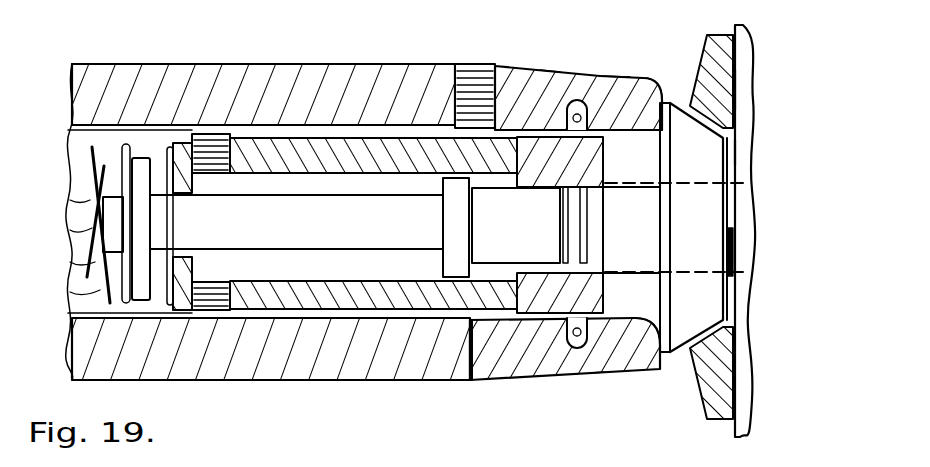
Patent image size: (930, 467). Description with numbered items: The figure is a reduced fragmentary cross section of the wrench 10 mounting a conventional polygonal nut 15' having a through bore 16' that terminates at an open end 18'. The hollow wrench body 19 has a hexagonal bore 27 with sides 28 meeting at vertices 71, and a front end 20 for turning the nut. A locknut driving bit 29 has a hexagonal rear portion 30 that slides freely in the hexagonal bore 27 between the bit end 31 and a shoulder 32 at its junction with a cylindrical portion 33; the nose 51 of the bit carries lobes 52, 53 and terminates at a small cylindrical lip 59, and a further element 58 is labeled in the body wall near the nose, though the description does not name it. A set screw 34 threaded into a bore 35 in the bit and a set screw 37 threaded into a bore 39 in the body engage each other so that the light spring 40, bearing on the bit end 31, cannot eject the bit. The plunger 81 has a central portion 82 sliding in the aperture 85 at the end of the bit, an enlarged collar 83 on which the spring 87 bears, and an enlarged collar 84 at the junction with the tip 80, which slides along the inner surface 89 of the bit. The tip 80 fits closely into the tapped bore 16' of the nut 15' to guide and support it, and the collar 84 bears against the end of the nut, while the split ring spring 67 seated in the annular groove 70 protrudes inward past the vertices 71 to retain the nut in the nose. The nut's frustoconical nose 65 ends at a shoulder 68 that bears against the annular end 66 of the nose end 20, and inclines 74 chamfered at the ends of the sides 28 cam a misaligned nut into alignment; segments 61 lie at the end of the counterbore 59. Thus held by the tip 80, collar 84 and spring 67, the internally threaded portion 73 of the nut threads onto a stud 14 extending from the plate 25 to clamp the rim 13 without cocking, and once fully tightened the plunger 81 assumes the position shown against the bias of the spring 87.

The wrench 10 is at (212, 40).
The hexagonal bore 27 is at (100, 125).
The bit end 31 is at (165, 150).
The wrench body 19 is at (276, 62).
The shoulder 32 is at (342, 195).
The plunger 81 is at (378, 195).
The locknut driving bit 29 is at (413, 172).
The bore 39 is at (463, 66).
The set screw 37 is at (478, 68).
The nose 51 is at (516, 60).
The end cap body 58 is at (553, 100).
The annular groove 70 is at (573, 100).
The polygonal nut 15' is at (616, 52).
The rim 13 is at (700, 48).
The front end 20 is at (637, 80).
The counterbore 59 is at (650, 100).
The plate 25 is at (748, 48).
The annular end 66 is at (737, 91).
The stud 14 is at (737, 153).
The shoulder 68 is at (662, 153).
The internally threaded portion 73 is at (735, 238).
The frustoconical nose 65 is at (712, 303).
The through bore 16' is at (674, 228).
The inclines 74 is at (645, 312).
The segments 61 is at (640, 358).
The split ring spring 67 is at (580, 348).
The open end 18' is at (504, 361).
The lobe 52 is at (472, 322).
The lobe 53 is at (468, 320).
The hexagonal rear portion 30 is at (288, 173).
The bore 35 is at (220, 178).
The set screw 34 is at (210, 180).
The cylindrical portion 33 is at (430, 170).
The inner surface 89 is at (440, 215).
The tip 80 is at (527, 241).
The collar 84 is at (455, 262).
The central portion 82 is at (350, 247).
The aperture 85 is at (190, 262).
The spring 87 is at (78, 262).
The light spring 40 is at (80, 292).
The vertices 71 is at (75, 195).
The sides 28 is at (78, 225).
The collar 83 is at (80, 314).